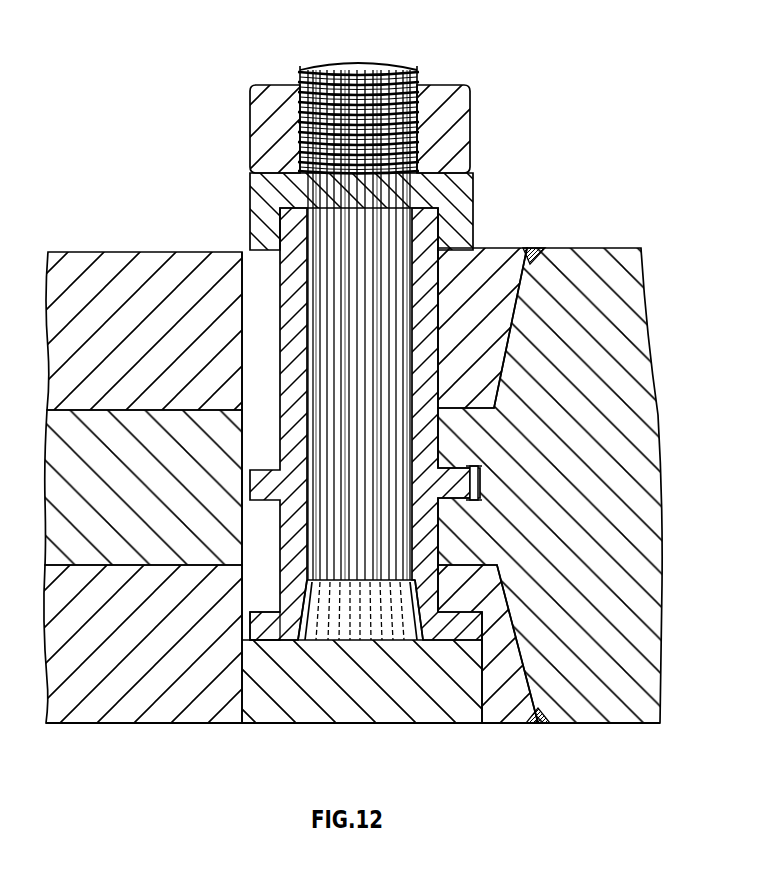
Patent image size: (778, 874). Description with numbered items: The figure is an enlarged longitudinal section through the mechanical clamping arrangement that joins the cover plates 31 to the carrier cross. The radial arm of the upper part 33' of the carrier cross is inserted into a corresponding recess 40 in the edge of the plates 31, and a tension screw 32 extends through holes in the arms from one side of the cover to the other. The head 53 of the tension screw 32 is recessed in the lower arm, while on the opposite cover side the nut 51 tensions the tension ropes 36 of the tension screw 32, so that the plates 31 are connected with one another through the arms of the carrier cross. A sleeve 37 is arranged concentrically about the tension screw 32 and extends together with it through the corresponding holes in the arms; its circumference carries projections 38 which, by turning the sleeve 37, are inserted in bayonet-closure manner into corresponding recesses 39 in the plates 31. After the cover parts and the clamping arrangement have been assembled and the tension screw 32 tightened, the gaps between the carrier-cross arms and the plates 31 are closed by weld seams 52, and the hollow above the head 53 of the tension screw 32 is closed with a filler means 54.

The plates 31 is at (120, 545).
The tension screw 32 is at (405, 62).
The upper part of the carrier cross 33' is at (320, 488).
The tension ropes 36 is at (370, 288).
The sleeve 37 is at (420, 235).
The projections 38 is at (457, 489).
The recesses 39 is at (478, 472).
The recesses 40 is at (530, 278).
The nut 51 is at (457, 102).
The weld seams 52 is at (538, 721).
The head 53 is at (277, 640).
The filler means 54 is at (400, 697).